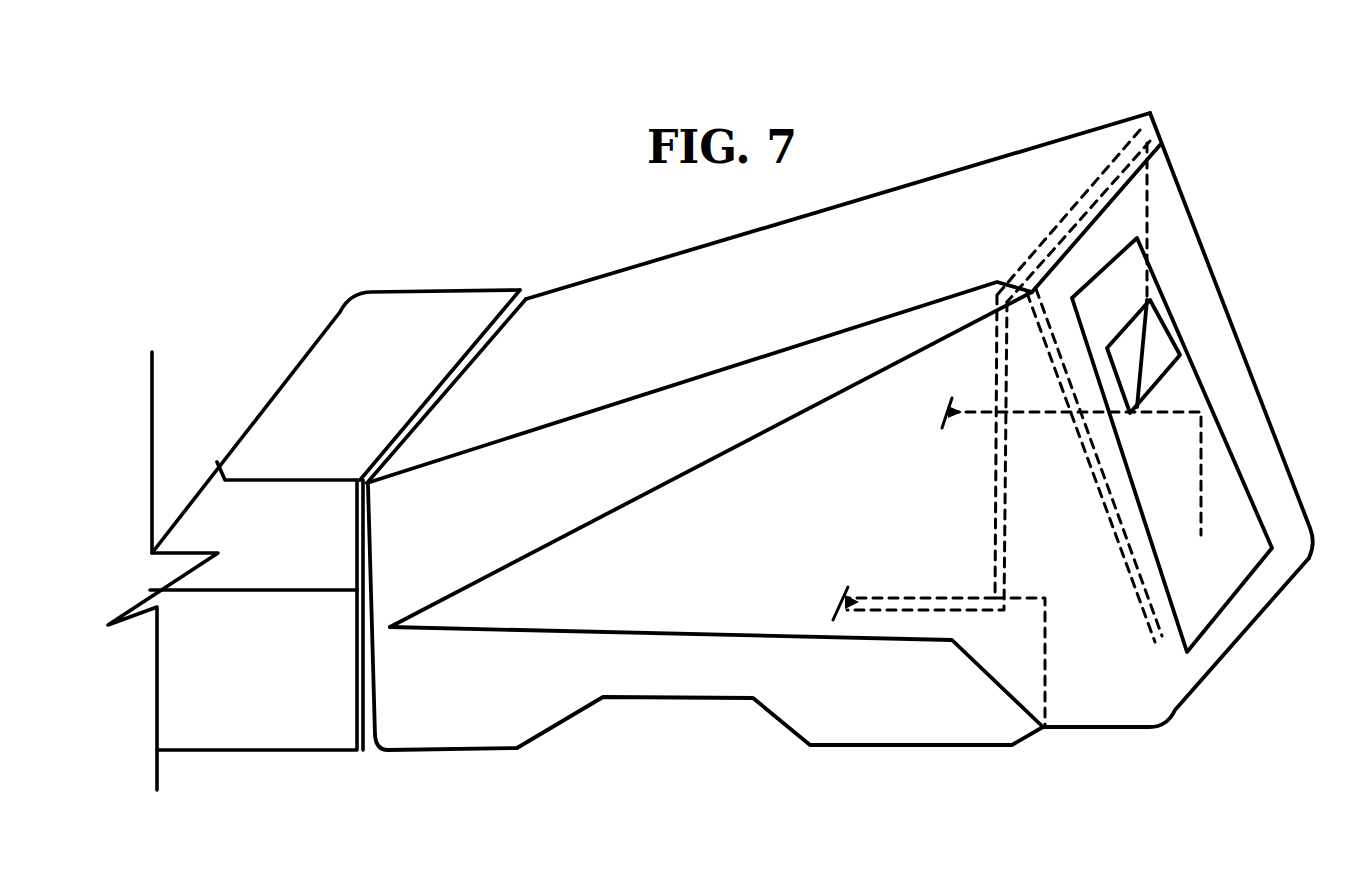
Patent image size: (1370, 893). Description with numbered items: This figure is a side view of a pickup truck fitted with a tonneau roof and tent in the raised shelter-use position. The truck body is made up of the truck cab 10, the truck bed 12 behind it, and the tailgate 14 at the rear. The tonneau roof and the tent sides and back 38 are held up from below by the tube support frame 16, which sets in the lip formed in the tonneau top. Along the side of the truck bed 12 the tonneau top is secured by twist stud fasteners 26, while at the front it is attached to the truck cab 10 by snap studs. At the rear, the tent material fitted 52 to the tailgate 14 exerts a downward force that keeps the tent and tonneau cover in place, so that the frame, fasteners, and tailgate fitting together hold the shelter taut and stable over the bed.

The truck cab 10 is at (399, 360).
The truck bed 12 is at (737, 698).
The tailgate 14 is at (1308, 553).
The tube support frame 16 is at (1080, 200).
The twist stud fasteners 26 is at (470, 630).
The tent sides and back 38 is at (899, 525).
The tent material fitted to tailgate 52 is at (1165, 727).